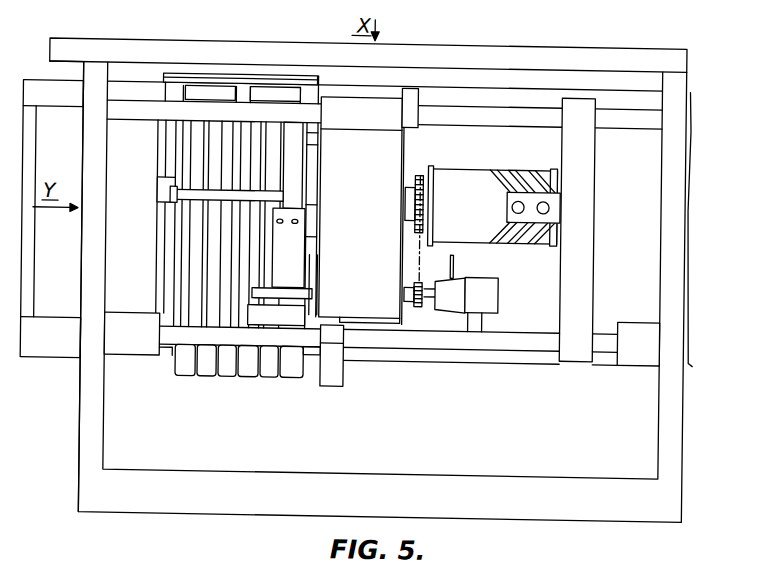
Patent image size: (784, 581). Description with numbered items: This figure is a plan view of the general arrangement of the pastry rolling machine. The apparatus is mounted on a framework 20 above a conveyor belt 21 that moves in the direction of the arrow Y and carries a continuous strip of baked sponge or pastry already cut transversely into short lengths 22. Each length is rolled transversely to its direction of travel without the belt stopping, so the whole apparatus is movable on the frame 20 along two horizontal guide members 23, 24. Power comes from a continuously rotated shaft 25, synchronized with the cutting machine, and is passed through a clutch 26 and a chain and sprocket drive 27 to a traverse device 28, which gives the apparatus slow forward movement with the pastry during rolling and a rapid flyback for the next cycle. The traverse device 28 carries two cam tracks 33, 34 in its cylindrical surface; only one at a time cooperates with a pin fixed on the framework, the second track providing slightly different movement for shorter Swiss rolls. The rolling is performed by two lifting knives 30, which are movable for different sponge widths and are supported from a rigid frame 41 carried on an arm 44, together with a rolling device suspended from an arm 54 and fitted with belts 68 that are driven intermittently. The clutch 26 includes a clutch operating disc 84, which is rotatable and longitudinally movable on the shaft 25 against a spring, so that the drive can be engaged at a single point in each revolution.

The framework 20 is at (172, 483).
The conveyor belt 21 is at (54, 338).
The short lengths 22 is at (54, 115).
The horizontal guide member 23 is at (524, 329).
The horizontal guide member 24 is at (456, 110).
The continuously rotated shaft 25 is at (253, 286).
The clutch 26 is at (495, 280).
The chain and sprocket drive 27 is at (418, 259).
The traverse device 28 is at (440, 197).
The lifting knife 30 is at (201, 89).
The cam track 33 is at (536, 158).
The cam track 34 is at (499, 169).
The rigid frame 41 is at (225, 79).
The arm 44 is at (297, 166).
The arm 54 is at (298, 243).
The belts 68 is at (231, 301).
The clutch operating disc 84 is at (456, 260).